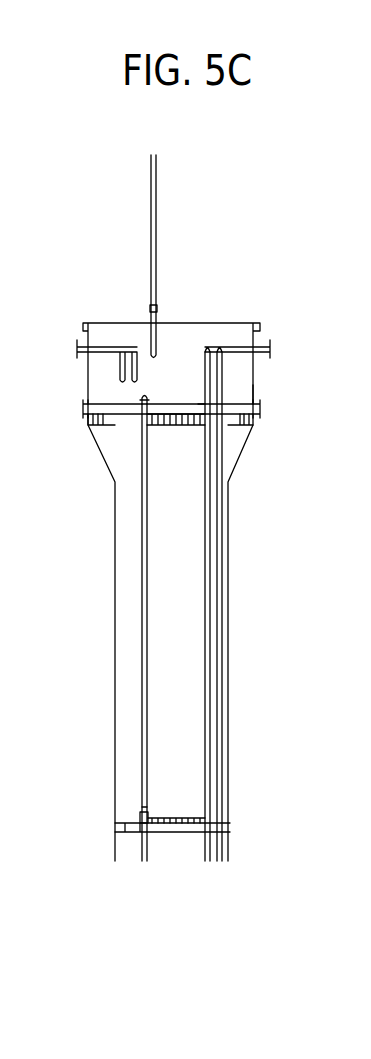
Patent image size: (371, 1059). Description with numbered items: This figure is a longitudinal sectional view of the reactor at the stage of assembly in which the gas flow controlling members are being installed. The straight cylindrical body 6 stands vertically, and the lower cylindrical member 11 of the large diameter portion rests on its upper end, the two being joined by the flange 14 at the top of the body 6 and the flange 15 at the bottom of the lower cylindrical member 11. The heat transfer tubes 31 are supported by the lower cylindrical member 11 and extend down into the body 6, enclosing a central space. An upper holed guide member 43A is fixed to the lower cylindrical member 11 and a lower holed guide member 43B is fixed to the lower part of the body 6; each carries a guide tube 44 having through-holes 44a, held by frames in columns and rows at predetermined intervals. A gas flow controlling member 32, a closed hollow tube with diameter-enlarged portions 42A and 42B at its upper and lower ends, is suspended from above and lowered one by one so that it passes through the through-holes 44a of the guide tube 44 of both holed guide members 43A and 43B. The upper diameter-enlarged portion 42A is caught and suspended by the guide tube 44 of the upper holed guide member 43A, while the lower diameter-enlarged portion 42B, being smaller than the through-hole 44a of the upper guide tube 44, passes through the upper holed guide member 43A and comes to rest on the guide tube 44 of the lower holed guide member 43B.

The body 6 is at (228, 650).
The lower cylindrical member 11 is at (262, 323).
The flange 14 is at (258, 413).
The flange 15 is at (258, 393).
The heat transfer tube 31 is at (120, 343).
The gas flow controlling member 32 is at (157, 210).
The diameter-enlarged portion 42A is at (138, 406).
The diameter-enlarged portion 42B is at (158, 310).
The holed guide member 43A is at (112, 427).
The holed guide member 43B is at (129, 822).
The guide tube 44 is at (193, 426).
The through-hole 44a is at (198, 404).